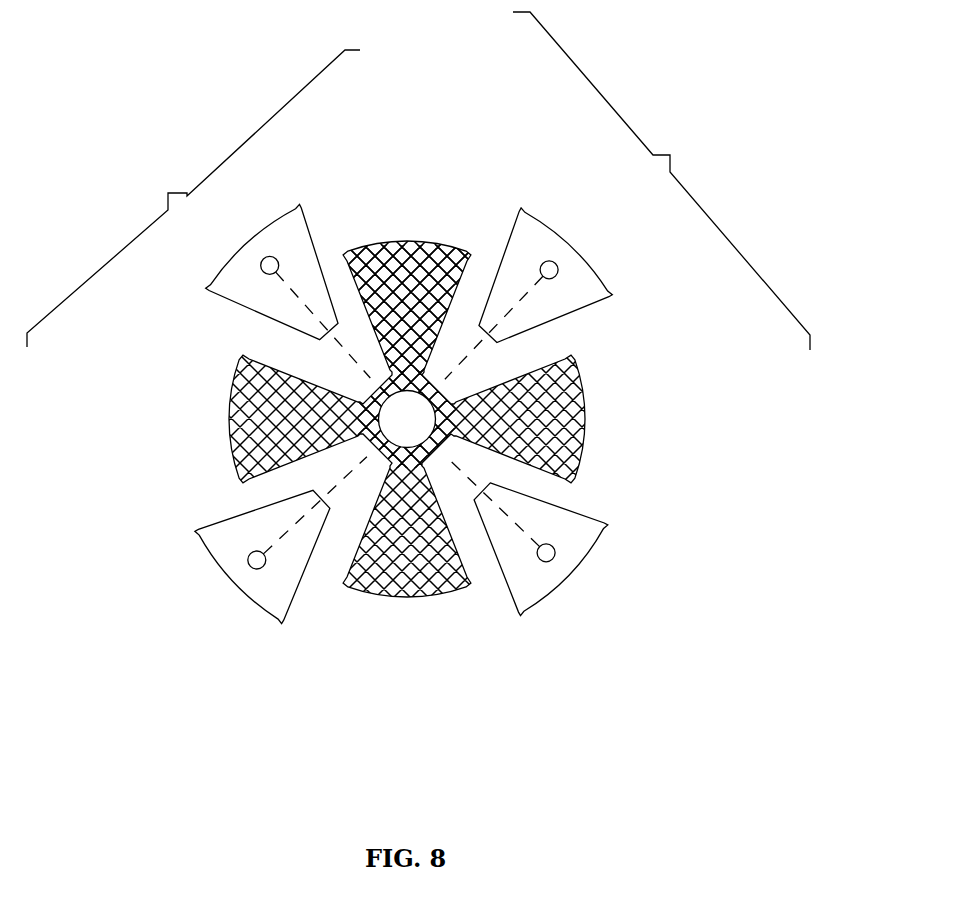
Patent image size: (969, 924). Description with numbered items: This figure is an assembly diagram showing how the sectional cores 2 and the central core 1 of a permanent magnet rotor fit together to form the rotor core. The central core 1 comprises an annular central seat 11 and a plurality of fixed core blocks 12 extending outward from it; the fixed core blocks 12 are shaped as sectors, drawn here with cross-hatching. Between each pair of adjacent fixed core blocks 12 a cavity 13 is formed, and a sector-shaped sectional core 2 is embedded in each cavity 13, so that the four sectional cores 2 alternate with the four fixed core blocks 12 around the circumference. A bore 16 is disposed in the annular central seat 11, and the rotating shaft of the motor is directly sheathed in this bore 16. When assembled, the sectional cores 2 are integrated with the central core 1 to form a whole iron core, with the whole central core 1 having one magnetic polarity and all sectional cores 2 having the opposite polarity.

The central core 1 is at (566, 380).
The sectional core 2 is at (533, 240).
The annular central seat 11 is at (367, 418).
The fixed core block 12 is at (400, 258).
The cavity 13 is at (463, 372).
The bore 16 is at (402, 431).